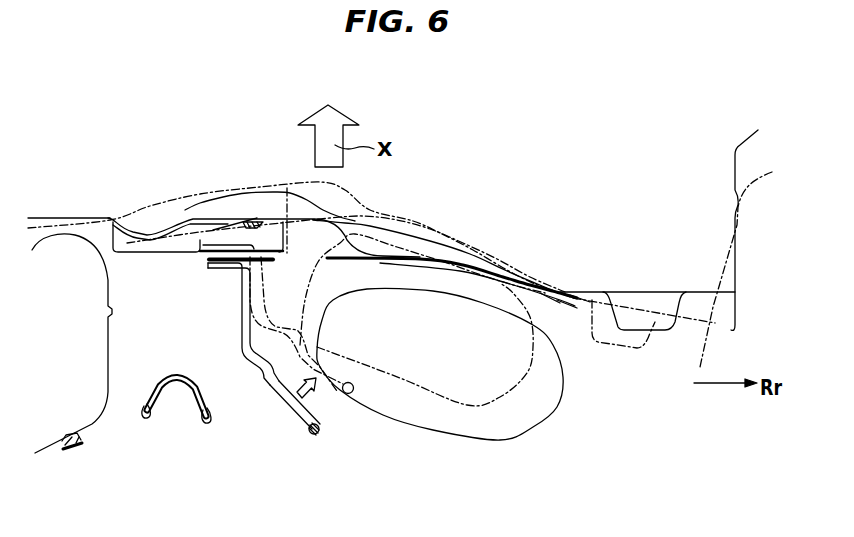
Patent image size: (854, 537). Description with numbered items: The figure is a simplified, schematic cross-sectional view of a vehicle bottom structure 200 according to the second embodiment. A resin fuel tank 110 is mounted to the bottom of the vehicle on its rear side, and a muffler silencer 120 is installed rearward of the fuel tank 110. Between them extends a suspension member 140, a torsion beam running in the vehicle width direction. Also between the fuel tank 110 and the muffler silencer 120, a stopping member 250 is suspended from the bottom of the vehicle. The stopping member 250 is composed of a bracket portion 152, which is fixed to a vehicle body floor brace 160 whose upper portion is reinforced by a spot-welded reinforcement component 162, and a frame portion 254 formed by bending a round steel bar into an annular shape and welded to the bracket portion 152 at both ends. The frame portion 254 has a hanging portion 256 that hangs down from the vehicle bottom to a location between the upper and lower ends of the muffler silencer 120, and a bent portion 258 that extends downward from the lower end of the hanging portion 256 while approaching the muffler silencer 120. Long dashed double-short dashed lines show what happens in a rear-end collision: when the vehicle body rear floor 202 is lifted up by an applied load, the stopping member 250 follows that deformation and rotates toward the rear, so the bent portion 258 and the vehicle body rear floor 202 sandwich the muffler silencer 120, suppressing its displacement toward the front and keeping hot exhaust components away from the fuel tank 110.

The vehicle bottom structure 200 is at (82, 170).
The fuel tank 110 is at (93, 424).
The muffler silencer 120 is at (560, 392).
The suspension member 140 is at (148, 393).
The bracket portion 152 is at (290, 262).
The vehicle body floor brace 160 is at (204, 255).
The reinforcement component 162 is at (209, 250).
The vehicle body rear floor 202 is at (345, 221).
The stopping member 250 is at (262, 271).
The frame portion 254 is at (325, 434).
The hanging portion 256 is at (206, 263).
The bent portion 258 is at (212, 367).